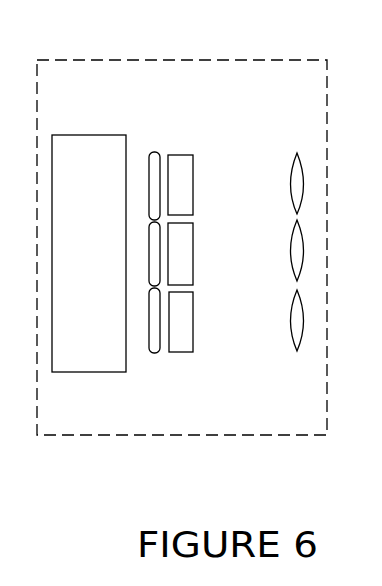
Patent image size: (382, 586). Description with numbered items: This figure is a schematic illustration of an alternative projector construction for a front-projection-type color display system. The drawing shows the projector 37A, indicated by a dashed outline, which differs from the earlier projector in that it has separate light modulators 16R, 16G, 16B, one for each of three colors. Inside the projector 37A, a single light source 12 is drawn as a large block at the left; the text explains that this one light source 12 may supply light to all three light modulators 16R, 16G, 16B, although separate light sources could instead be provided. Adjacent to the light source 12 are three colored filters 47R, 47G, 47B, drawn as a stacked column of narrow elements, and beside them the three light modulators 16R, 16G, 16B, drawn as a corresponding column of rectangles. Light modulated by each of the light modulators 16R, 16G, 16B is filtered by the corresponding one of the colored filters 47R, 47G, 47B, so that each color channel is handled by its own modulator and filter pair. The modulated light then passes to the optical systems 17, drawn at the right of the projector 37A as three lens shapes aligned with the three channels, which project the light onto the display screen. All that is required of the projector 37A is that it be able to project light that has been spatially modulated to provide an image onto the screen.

The projector 37A is at (180, 60).
The light source 12 is at (100, 135).
The colored filter 47R is at (152, 152).
The colored filter 47G is at (149, 262).
The colored filter 47B is at (155, 353).
The light modulator 16R is at (186, 155).
The light modulator 16G is at (194, 250).
The light modulator 16B is at (177, 352).
The optical systems 17 is at (297, 153).